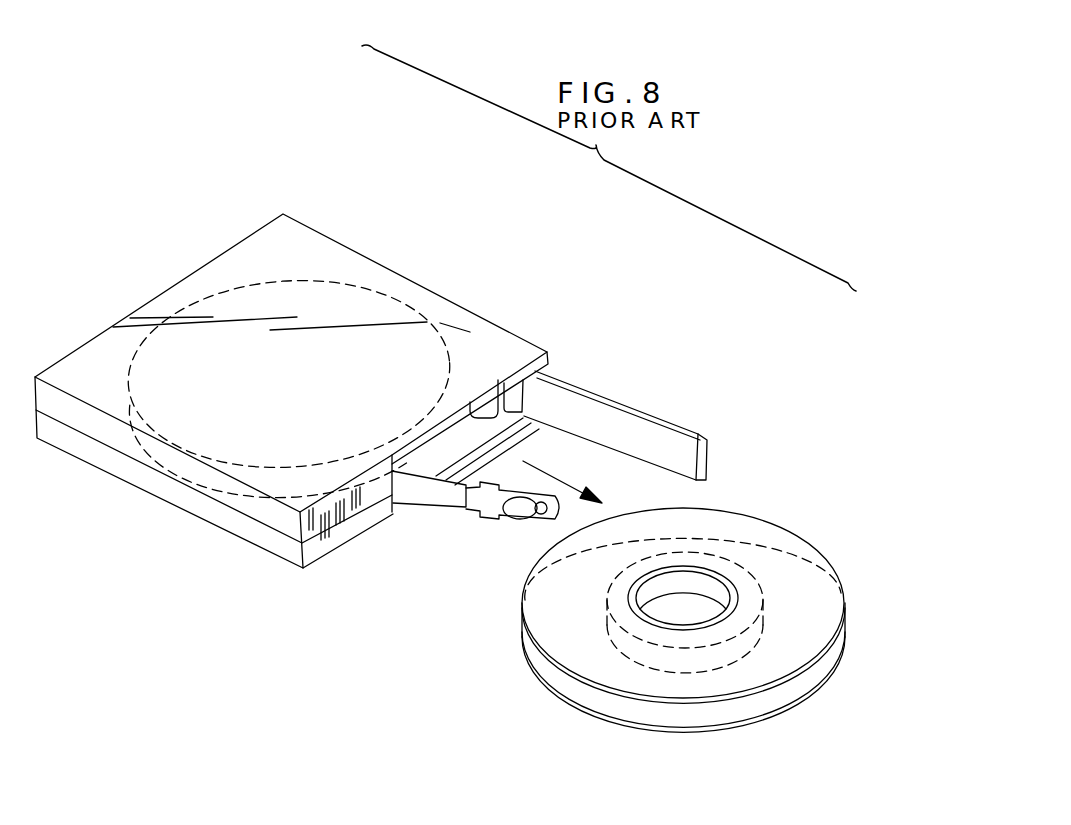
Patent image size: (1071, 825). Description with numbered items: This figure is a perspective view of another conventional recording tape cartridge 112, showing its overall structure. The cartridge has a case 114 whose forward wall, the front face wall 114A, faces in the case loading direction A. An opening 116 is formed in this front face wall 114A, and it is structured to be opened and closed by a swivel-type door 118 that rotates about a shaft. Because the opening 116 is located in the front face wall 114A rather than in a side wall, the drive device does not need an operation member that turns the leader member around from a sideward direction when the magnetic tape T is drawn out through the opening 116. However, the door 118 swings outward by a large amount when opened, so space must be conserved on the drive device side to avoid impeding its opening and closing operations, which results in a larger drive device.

The recording tape cartridge 112 is at (553, 233).
The case 114 is at (410, 281).
The front face wall 114A is at (330, 553).
The opening 116 is at (496, 392).
The swivel-type door 118 is at (672, 421).
The magnetic tape T is at (443, 503).
The case loading direction A is at (552, 470).